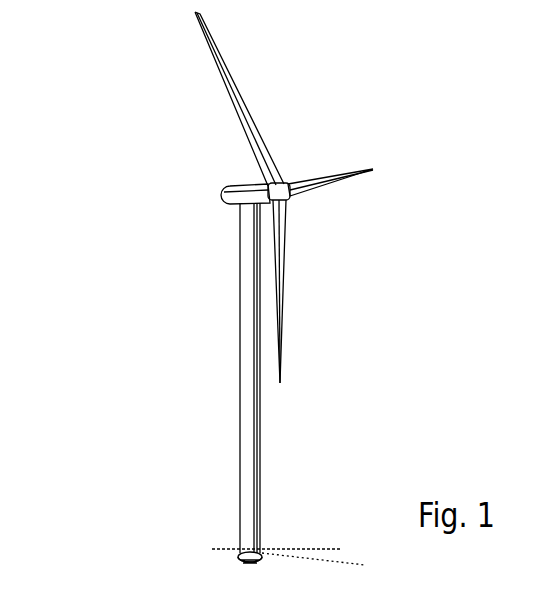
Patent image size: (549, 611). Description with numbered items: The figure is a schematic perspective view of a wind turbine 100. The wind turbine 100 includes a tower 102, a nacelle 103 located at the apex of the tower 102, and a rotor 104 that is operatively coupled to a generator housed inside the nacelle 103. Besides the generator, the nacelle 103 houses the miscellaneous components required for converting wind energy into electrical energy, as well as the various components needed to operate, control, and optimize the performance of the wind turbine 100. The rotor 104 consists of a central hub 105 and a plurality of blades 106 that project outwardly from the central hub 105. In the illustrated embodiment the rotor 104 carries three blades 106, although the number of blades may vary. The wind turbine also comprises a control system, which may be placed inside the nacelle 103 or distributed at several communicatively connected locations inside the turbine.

The wind turbine 100 is at (104, 147).
The tower 102 is at (245, 318).
The nacelle 103 is at (233, 184).
The rotor 104 is at (357, 263).
The central hub 105 is at (283, 185).
The blades 106 is at (242, 107).